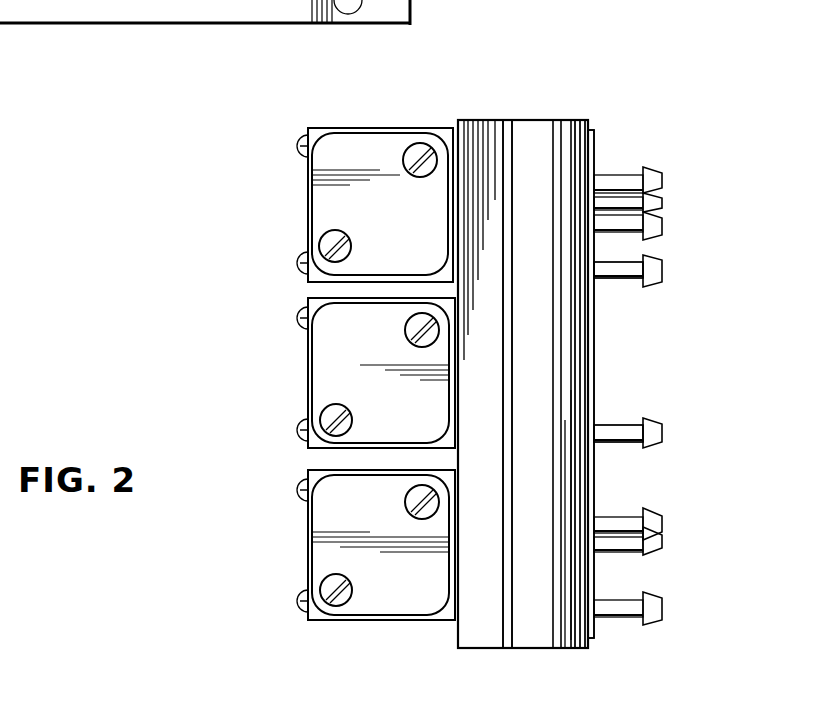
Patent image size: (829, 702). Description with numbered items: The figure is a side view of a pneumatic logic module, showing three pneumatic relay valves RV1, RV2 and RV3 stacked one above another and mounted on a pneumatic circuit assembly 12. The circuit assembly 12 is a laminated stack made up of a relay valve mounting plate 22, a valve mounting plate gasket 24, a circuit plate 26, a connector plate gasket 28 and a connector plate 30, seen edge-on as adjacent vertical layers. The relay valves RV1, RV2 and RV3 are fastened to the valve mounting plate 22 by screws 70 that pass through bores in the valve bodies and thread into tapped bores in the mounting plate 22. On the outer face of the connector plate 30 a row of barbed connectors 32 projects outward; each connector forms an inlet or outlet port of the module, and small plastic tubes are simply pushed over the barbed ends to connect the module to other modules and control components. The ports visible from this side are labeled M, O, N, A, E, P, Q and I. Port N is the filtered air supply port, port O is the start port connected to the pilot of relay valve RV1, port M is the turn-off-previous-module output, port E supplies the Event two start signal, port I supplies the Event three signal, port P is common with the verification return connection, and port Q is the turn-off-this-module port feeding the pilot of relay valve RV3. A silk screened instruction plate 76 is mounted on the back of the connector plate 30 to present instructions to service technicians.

The pneumatic circuit assembly 12 is at (201, 14).
The relay valve mounting plate 22 is at (476, 136).
The valve mounting plate gasket 24 is at (506, 128).
The circuit plate 26 is at (525, 132).
The connector plate gasket 28 is at (560, 120).
The connector plate 30 is at (586, 121).
The silk screened instruction plate 76 is at (597, 150).
The barbed connectors 32 is at (622, 282).
The screws 70 is at (143, 0).
The pneumatic relay valve RV1 is at (308, 233).
The pneumatic relay valve RV2 is at (308, 362).
The pneumatic relay valve RV3 is at (308, 538).
The port M is at (650, 167).
The port O is at (662, 202).
The port N is at (662, 228).
The port A is at (662, 270).
The port E is at (662, 432).
The port P is at (657, 522).
The port Q is at (660, 540).
The port I is at (660, 608).